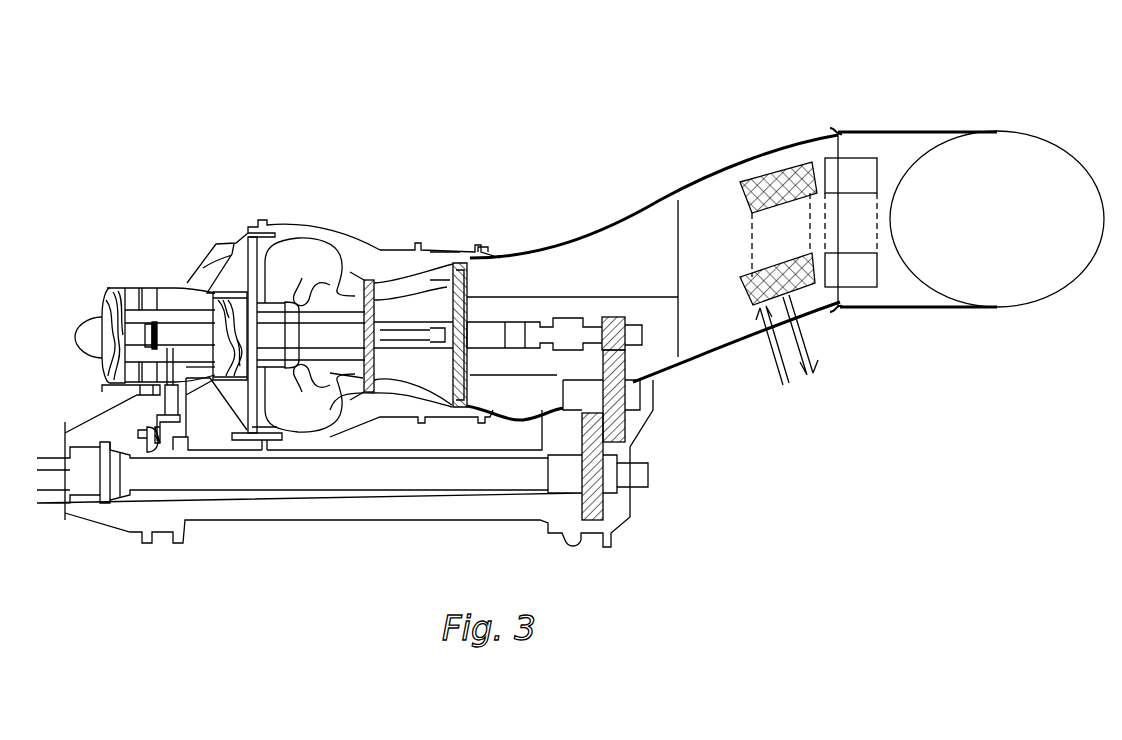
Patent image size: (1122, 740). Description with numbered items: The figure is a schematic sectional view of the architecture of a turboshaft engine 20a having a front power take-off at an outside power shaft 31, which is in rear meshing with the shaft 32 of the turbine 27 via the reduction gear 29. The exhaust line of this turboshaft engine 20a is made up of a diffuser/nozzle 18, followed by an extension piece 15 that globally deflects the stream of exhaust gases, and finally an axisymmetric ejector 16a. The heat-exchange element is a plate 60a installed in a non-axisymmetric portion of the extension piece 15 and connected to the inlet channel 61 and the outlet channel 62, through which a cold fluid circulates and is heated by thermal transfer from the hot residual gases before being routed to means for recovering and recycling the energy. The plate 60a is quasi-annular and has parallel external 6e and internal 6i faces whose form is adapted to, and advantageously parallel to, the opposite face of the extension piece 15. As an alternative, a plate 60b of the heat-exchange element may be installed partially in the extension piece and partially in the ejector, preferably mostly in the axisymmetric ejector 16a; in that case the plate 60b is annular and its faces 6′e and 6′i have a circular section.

The turboshaft engine 20a is at (368, 182).
The turbine 27 is at (463, 262).
The shaft of the turbine 32 is at (506, 312).
The diffuser/nozzle 18 is at (638, 248).
The extension piece 15 is at (767, 146).
The external face 6e is at (790, 158).
The external face 6′e is at (857, 152).
The axisymmetric ejector 16a is at (935, 124).
The plate 60a is at (757, 175).
The internal face 6i is at (757, 259).
The internal face 6′i is at (858, 244).
The plate 60b is at (858, 287).
The reduction gear 29 is at (648, 404).
The outside power shaft 31 is at (366, 500).
The inlet channel 61 is at (775, 368).
The outlet channel 62 is at (803, 348).